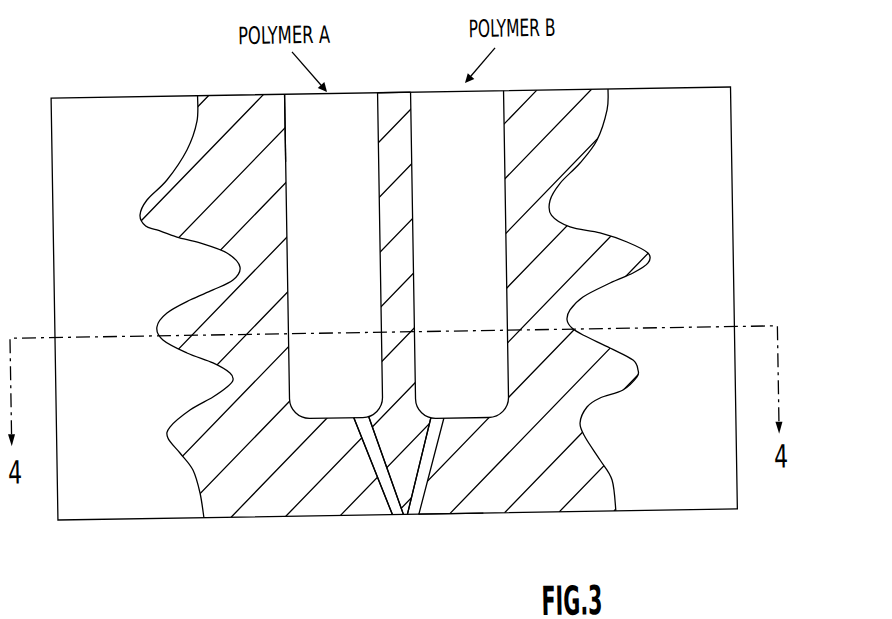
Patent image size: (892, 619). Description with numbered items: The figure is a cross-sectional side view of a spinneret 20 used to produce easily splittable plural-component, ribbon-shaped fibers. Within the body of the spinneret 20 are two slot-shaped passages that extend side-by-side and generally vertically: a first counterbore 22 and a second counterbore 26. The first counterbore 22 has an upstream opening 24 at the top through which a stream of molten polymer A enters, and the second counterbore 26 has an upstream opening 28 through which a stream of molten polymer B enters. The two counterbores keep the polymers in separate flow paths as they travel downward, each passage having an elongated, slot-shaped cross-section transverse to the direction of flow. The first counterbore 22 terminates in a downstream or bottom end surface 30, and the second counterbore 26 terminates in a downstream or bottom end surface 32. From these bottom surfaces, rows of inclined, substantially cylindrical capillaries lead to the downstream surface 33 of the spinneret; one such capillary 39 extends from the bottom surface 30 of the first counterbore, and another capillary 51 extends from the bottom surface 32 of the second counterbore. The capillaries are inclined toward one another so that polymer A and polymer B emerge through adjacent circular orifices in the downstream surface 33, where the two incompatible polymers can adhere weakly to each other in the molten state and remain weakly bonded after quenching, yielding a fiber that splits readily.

The spinneret 20 is at (771, 184).
The first counterbore or slot-shaped passage 22 is at (353, 137).
The upstream opening 24 is at (290, 92).
The second counterbore or slot-shaped passage 26 is at (480, 143).
The upstream opening 28 is at (426, 90).
The downstream or bottom end surface 30 is at (341, 419).
The downstream or bottom end surface 32 is at (471, 424).
The downstream surface 33 is at (439, 516).
The capillary 39 is at (374, 473).
The capillary 51 is at (416, 490).